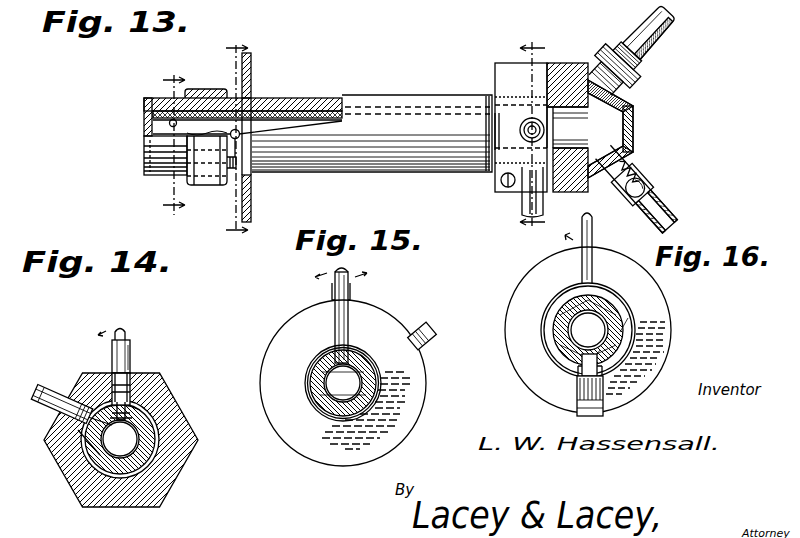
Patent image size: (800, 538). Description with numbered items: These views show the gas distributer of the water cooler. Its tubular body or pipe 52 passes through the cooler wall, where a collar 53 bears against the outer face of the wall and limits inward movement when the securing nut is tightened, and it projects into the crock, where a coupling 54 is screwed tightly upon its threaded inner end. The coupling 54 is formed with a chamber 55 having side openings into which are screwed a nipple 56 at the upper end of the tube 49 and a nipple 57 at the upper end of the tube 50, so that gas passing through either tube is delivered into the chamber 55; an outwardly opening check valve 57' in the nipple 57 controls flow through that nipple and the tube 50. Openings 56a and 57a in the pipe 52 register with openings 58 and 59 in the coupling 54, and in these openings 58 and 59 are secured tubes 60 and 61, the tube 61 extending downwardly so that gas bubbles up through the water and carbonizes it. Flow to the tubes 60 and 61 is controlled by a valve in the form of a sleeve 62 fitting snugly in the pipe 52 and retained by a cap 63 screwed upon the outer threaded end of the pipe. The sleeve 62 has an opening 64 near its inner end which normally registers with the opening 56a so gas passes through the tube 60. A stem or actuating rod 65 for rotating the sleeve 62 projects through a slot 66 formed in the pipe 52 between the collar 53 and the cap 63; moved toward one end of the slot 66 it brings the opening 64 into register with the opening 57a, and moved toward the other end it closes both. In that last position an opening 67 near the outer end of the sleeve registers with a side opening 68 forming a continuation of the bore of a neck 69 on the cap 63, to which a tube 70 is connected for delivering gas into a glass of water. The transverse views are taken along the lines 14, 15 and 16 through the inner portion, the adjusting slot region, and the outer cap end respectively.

In FIG. 13, the section line 14— 14 is at (532, 135).
In FIG. 13, the section line 15— 15 is at (237, 138).
In FIG. 13, the section line 16— 16 is at (174, 143).
In FIG. 13, the tube 49 is at (665, 24).
In FIG. 13, the tube 50 is at (672, 210).
In FIG. 13, the tubular body or pipe 52 is at (408, 100).
In FIG. 14, the tubular body or pipe 52 is at (152, 447).
In FIG. 15, the tubular body or pipe 52 is at (378, 403).
In FIG. 13, the collar 53 is at (252, 78).
In FIG. 15, the collar 53 is at (300, 324).
In FIG. 16, the collar 53 is at (655, 317).
In FIG. 13, the coupling 54 is at (552, 70).
In FIG. 14, the coupling 54 is at (130, 395).
In FIG. 13, the chamber 55 is at (608, 132).
In FIG. 13, the nipple 56 is at (650, 62).
In FIG. 14, the opening 56a is at (132, 412).
In FIG. 13, the nipple 57 is at (639, 170).
In FIG. 13, the check valve 57' is at (657, 179).
In FIG. 14, the opening 57a is at (78, 430).
In FIG. 14, the opening 58 is at (156, 379).
In FIG. 14, the opening 59 is at (94, 396).
In FIG. 13, the tube 60 is at (530, 118).
In FIG. 14, the tube 60 is at (130, 352).
In FIG. 15, the tube 60 is at (352, 292).
In FIG. 13, the tube 61 is at (528, 197).
In FIG. 14, the tube 61 is at (40, 398).
In FIG. 15, the tube 61 is at (420, 325).
In FIG. 13, the sleeve 62 is at (330, 104).
In FIG. 14, the sleeve 62 is at (120, 505).
In FIG. 15, the sleeve 62 is at (330, 404).
In FIG. 16, the sleeve 62 is at (560, 318).
In FIG. 13, the cap 63 is at (146, 150).
In FIG. 16, the cap 63 is at (655, 344).
In FIG. 14, the opening 64 is at (140, 417).
In FIG. 13, the stem or actuating rod 65 is at (239, 131).
In FIG. 14, the stem or actuating rod 65 is at (126, 333).
In FIG. 15, the stem or actuating rod 65 is at (352, 270).
In FIG. 16, the stem or actuating rod 65 is at (593, 245).
In FIG. 13, the slot 66 is at (229, 166).
In FIG. 15, the slot 66 is at (314, 363).
In FIG. 13, the opening 67 is at (148, 124).
In FIG. 16, the opening 67 is at (556, 348).
In FIG. 16, the side opening 68 is at (580, 372).
In FIG. 16, the neck 69 is at (628, 352).
In FIG. 16, the tube 70 is at (606, 412).